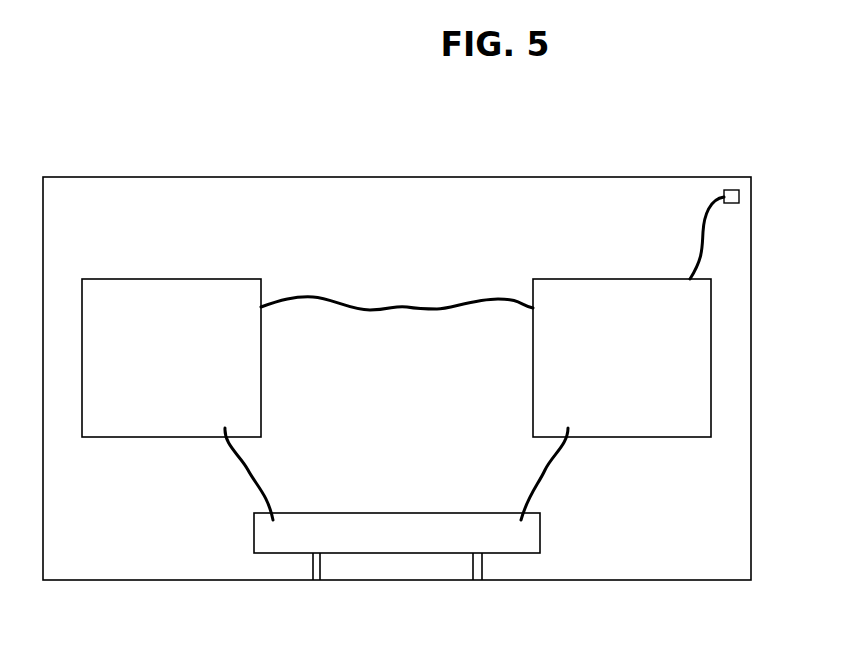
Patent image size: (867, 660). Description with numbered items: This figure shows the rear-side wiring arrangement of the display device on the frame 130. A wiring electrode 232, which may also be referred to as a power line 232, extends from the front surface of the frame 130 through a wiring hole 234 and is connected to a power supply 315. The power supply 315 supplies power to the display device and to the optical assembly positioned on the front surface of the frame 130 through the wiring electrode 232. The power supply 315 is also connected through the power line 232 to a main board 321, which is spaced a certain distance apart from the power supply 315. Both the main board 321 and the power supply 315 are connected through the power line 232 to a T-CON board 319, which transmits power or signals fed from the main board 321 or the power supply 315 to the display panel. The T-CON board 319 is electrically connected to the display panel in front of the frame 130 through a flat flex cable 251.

The frame 130 is at (536, 192).
The wiring electrode 232 is at (387, 305).
The wiring hole 234 is at (729, 190).
The T-CON board 319 is at (149, 413).
The power supply 315 is at (645, 412).
The main board 321 is at (393, 542).
The flat flex cable (FFC) cable 251 is at (475, 569).